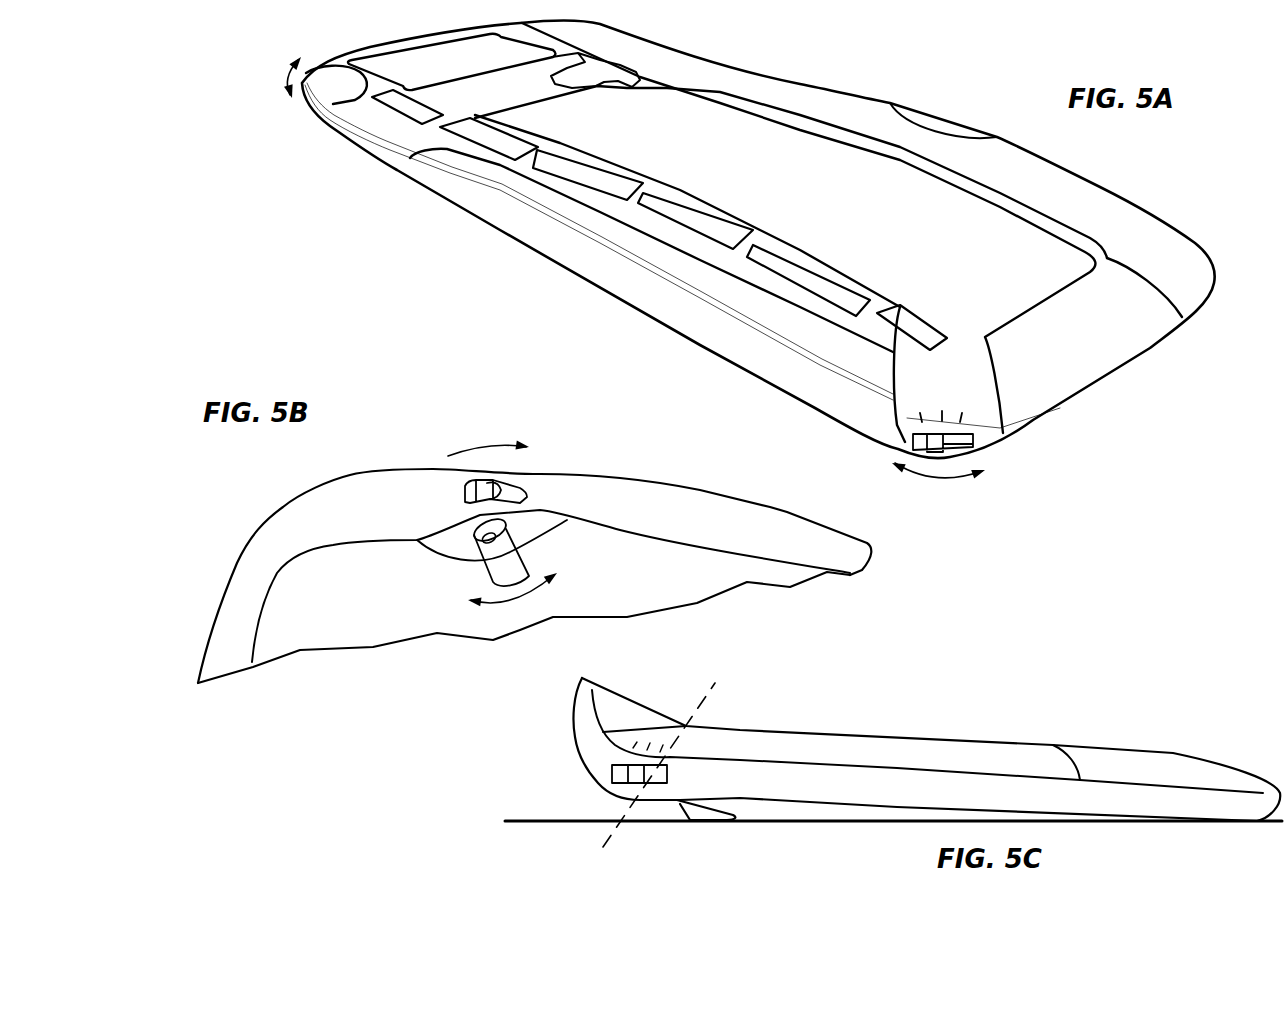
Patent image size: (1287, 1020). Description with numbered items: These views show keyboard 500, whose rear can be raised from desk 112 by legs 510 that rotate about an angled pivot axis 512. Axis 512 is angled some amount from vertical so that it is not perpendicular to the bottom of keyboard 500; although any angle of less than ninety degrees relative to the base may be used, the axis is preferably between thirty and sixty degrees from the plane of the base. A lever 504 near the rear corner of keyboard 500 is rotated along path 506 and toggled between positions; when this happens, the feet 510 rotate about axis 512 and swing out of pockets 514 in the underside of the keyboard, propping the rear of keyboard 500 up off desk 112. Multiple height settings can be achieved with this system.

In FIG. 5A, the keyboard 500 is at (895, 72).
In FIG. 5B, the keyboard 500 is at (254, 493).
In FIG. 5C, the keyboard 500 is at (929, 706).
In FIG. 5A, the lever 504 is at (932, 428).
In FIG. 5B, the lever 504 is at (465, 483).
In FIG. 5C, the lever 504 is at (598, 775).
In FIG. 5A, the path 506 is at (940, 481).
In FIG. 5B, the legs 510 is at (527, 560).
In FIG. 5C, the legs 510 is at (688, 805).
In FIG. 5C, the angled pivot axis 512 is at (705, 701).
In FIG. 5B, the pockets 514 is at (449, 556).
In FIG. 5C, the desk 112 is at (566, 827).